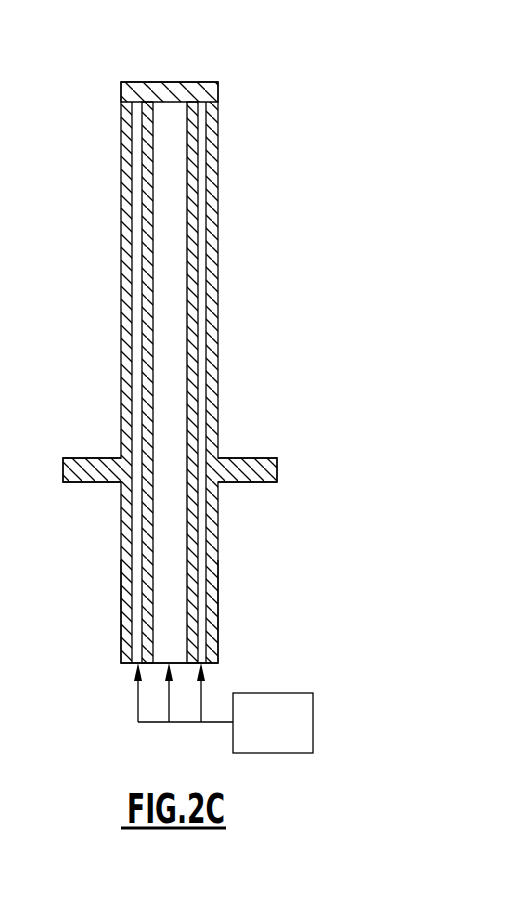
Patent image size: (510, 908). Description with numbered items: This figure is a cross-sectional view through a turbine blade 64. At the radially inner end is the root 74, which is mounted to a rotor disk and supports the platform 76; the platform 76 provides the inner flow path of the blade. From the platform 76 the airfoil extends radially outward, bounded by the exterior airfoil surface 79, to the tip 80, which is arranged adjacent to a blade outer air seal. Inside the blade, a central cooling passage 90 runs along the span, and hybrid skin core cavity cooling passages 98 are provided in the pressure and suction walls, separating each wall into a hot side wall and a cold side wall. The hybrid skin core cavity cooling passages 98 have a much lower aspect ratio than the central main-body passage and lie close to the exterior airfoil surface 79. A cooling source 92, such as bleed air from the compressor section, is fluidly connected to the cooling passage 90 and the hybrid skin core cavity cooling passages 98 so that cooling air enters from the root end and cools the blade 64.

The turbine blade 64 is at (85, 318).
The root 74 is at (218, 580).
The platform 76 is at (250, 457).
The exterior airfoil surface 79 is at (228, 270).
The tip 80 is at (164, 82).
The cooling passage 90 is at (172, 365).
The cooling source 92 is at (259, 735).
The hybrid skin core cavity cooling passages 98 is at (140, 133).